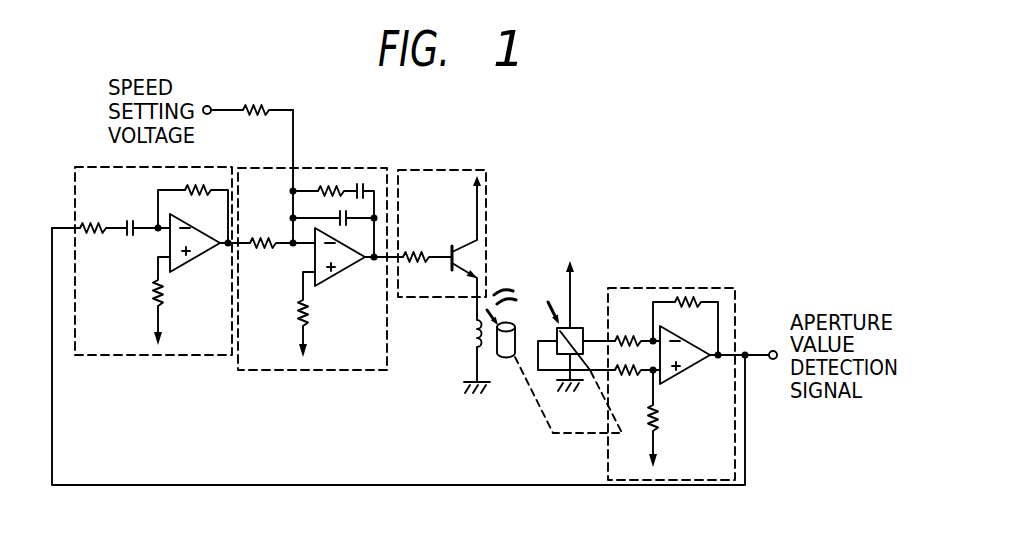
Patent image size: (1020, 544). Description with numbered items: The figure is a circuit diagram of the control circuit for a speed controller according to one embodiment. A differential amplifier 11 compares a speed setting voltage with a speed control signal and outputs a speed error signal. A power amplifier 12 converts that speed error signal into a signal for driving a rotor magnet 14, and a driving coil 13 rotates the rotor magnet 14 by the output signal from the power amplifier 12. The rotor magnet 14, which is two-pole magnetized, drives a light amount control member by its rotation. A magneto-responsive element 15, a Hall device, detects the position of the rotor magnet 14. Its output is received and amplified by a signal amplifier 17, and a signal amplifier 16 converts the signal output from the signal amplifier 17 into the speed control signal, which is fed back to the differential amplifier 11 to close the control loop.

The differential amplifier 11 is at (330, 372).
The power amplifier 12 is at (437, 170).
The driving coil 13 is at (477, 343).
The rotor magnet 14 is at (506, 358).
The magneto-responsive element 15 is at (575, 320).
The signal amplifier 16 is at (147, 356).
The signal amplifier 17 is at (716, 285).